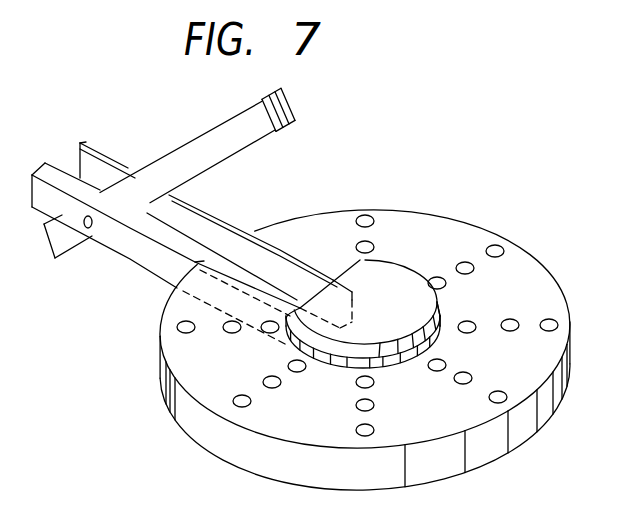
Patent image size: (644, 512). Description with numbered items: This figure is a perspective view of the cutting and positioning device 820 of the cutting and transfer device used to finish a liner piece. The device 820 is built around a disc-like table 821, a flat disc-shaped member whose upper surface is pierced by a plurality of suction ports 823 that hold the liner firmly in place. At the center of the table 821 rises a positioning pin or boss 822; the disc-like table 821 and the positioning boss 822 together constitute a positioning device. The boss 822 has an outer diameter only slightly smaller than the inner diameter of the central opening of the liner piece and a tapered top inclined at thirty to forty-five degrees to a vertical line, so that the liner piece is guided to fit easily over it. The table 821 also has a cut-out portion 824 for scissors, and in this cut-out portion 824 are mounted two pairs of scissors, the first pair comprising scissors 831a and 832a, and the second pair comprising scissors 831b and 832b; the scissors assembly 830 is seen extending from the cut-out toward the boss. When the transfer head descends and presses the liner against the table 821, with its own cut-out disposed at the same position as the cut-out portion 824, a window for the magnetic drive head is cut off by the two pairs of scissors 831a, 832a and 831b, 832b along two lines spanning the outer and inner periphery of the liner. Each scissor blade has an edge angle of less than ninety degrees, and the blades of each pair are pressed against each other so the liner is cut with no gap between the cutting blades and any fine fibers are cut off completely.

The rotary disc 820 is at (431, 208).
The disc-like table 821 is at (526, 264).
The positioning boss 822 is at (400, 278).
The suction ports 823 is at (511, 324).
The cut-out portion 824 is at (255, 231).
The lever assembly 830 is at (120, 150).
The scissors 831a is at (153, 240).
The scissors 831b is at (235, 220).
The scissors 832a is at (258, 122).
The scissors 832b is at (287, 101).